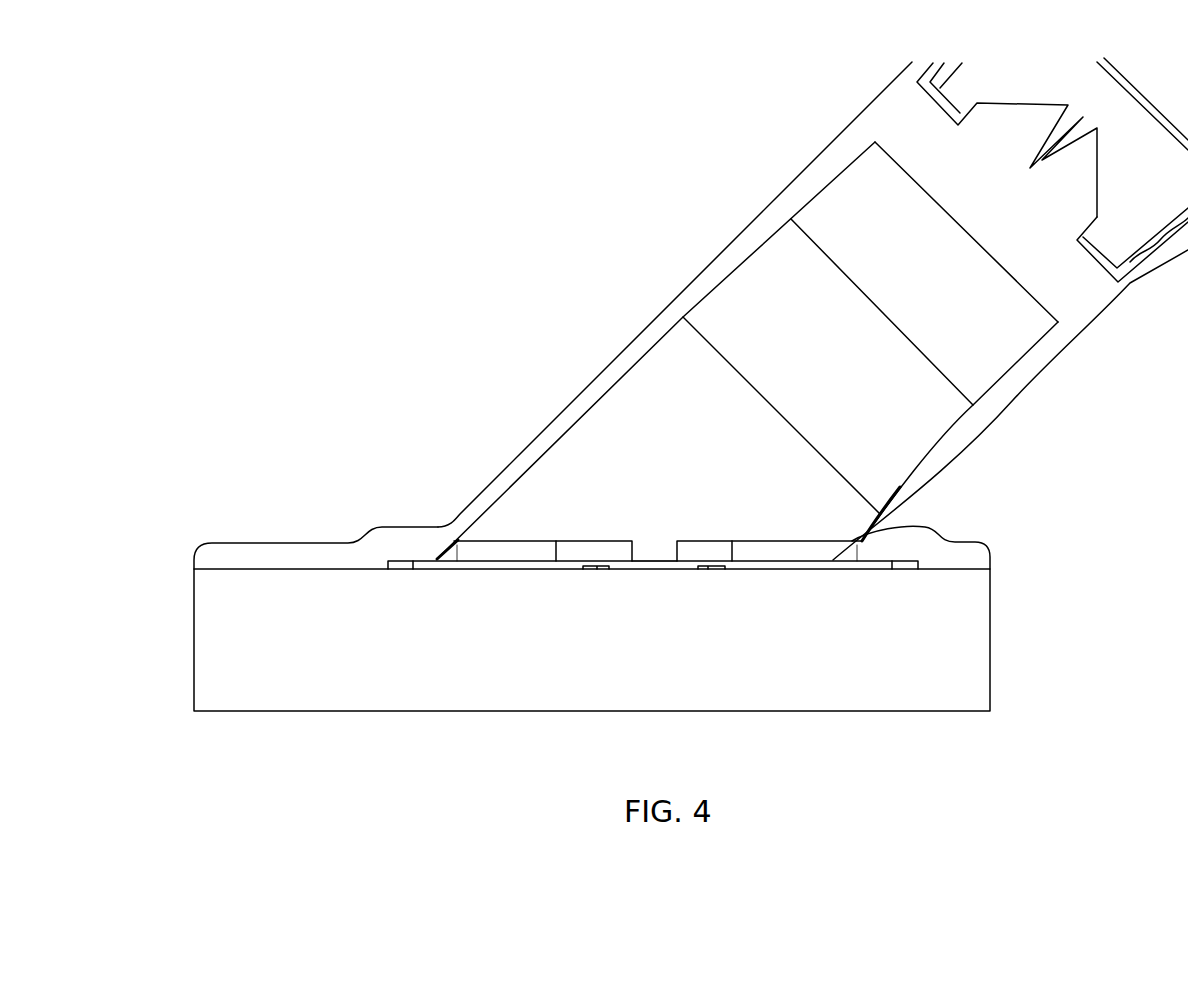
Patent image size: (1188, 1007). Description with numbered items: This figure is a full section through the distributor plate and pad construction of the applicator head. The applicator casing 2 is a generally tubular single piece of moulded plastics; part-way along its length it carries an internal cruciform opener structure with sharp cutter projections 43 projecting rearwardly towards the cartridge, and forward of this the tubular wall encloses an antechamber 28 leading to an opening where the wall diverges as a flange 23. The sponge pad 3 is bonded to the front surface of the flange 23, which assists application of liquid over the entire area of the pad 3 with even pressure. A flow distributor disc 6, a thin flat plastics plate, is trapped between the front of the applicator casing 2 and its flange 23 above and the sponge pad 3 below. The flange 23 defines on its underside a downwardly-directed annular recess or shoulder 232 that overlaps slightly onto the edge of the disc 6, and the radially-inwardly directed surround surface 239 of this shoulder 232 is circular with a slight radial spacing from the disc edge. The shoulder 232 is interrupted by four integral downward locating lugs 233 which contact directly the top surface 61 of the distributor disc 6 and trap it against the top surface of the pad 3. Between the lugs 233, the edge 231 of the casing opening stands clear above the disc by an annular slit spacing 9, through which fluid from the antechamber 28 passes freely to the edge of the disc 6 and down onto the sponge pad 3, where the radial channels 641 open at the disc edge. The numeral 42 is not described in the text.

The applicator casing 2 is at (1056, 396).
The sponge pad 3 is at (930, 688).
The flow distributor disc 6 is at (780, 562).
The annular slit spacing 9 is at (503, 556).
The flange 23 is at (279, 534).
The antechamber 28 is at (709, 451).
The upper notch 42 is at (913, 118).
The cutter projections 43 is at (1073, 195).
The top surface of the distributor plate 61 is at (800, 560).
The edge of the casing opening 231 is at (593, 541).
The annular recess or shoulder 232 is at (556, 570).
The locating lugs 233 is at (428, 553).
The surround surface 239 is at (400, 568).
The radial channels 641 is at (597, 570).